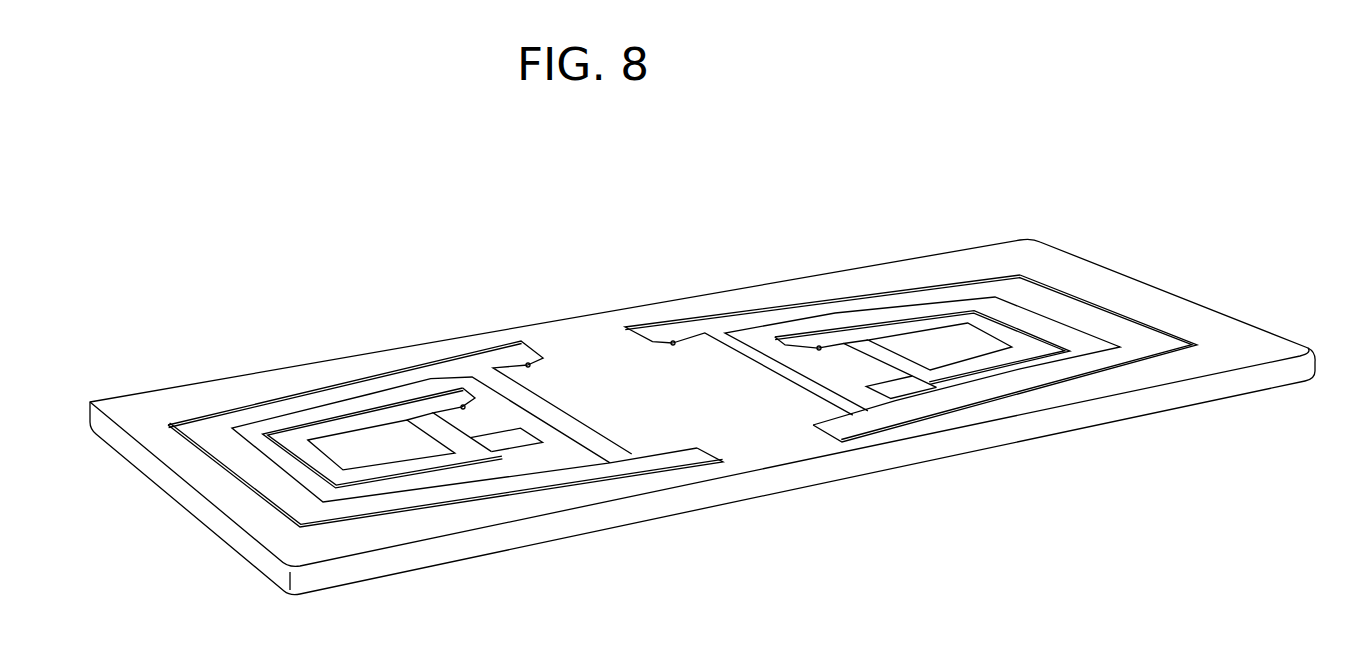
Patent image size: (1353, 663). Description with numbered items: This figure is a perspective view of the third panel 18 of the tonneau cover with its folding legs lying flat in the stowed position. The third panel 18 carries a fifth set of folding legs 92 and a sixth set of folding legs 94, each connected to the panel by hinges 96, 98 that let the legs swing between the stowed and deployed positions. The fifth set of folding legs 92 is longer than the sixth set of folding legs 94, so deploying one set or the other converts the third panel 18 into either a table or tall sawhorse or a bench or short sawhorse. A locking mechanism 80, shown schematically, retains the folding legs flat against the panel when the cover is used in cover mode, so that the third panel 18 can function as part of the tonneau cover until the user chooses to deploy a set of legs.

The third panel 18 is at (747, 492).
The locking mechanism 80 is at (673, 343).
The fifth set of folding legs 92 is at (485, 490).
The sixth set of folding legs 94 is at (330, 430).
The hinge 96 is at (200, 457).
The hinge 98 is at (290, 450).